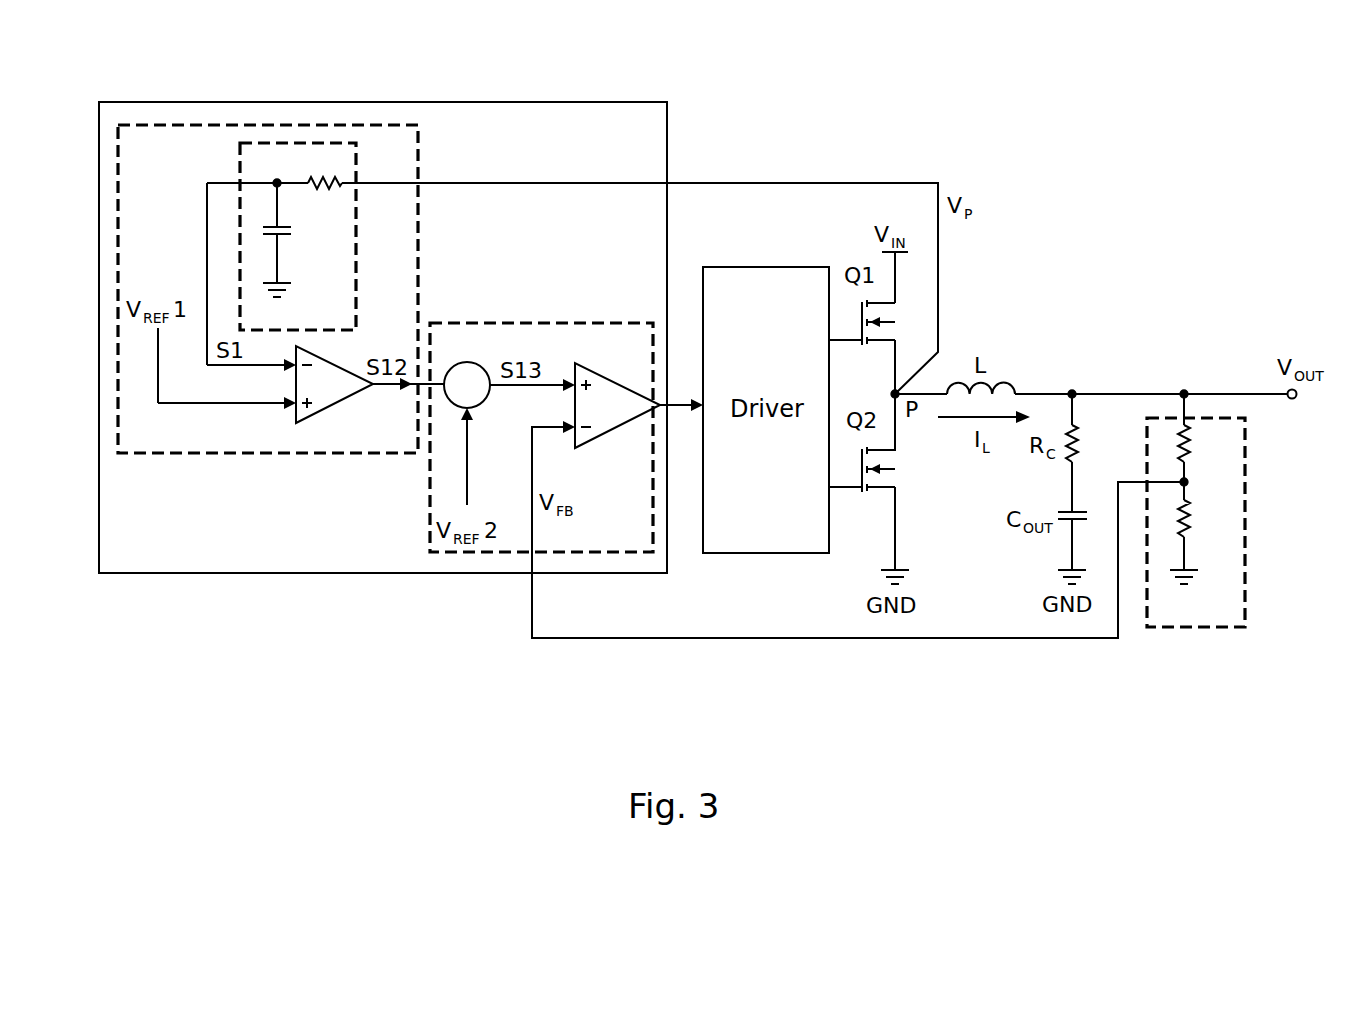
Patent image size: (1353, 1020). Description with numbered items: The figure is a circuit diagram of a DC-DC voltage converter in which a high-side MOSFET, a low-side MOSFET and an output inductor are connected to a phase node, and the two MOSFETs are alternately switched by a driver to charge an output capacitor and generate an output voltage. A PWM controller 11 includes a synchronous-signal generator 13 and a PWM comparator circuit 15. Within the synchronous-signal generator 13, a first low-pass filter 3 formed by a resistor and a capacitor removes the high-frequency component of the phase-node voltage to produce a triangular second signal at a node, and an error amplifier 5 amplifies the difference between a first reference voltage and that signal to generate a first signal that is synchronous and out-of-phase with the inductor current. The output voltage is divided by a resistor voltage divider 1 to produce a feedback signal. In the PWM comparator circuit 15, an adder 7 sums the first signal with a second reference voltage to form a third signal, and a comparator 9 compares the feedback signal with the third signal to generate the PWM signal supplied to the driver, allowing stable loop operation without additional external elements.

The resistor voltage divider 1 is at (1245, 518).
The first low-pass filter 3 is at (240, 238).
The error amplifier 5 is at (337, 403).
The adder 7 is at (463, 363).
The comparator 9 is at (617, 430).
The PWM controller 11 is at (382, 573).
The synchronous-signal generator 13 is at (270, 453).
The PWM comparator circuit 15 is at (538, 322).